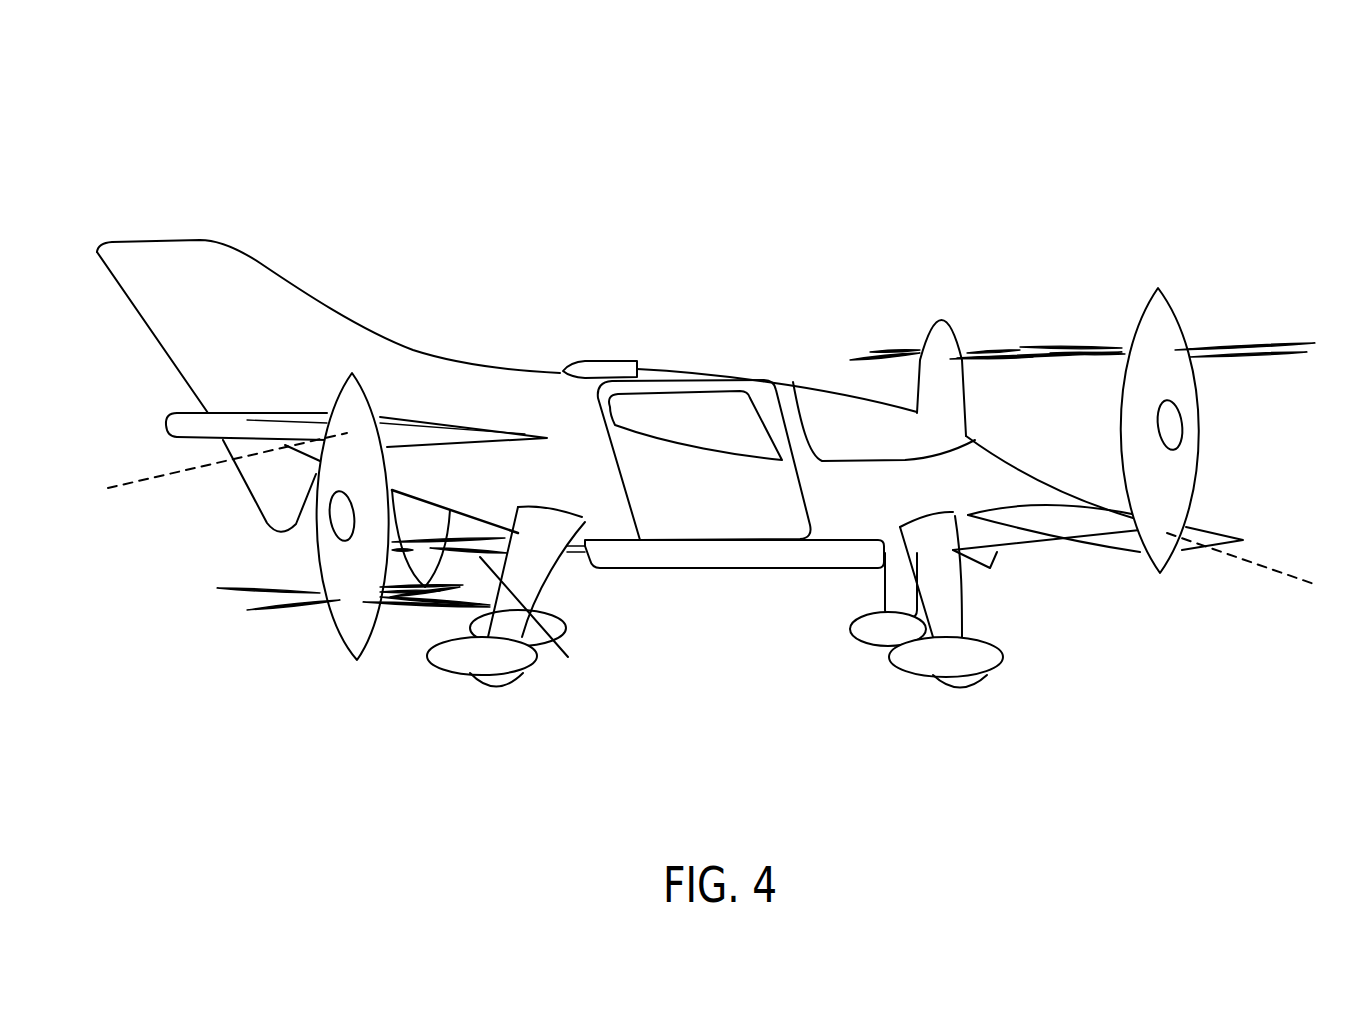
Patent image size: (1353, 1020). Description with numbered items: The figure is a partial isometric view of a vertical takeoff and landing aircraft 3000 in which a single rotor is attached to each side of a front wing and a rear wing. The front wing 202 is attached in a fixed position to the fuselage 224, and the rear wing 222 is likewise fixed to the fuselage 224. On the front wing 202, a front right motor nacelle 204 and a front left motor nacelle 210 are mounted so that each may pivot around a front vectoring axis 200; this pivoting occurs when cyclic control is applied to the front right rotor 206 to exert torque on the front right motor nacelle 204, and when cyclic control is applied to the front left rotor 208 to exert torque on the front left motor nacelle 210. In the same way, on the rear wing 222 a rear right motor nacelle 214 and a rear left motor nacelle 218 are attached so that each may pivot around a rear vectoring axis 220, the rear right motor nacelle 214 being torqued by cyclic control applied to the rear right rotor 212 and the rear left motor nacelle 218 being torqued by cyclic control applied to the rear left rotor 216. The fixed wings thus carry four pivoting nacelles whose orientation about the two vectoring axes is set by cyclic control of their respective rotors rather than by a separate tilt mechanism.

The vertical takeoff and landing aircraft 3000 is at (702, 368).
The front vectoring axis 200 is at (1273, 566).
The front wing 202 is at (1078, 523).
The front right motor nacelle 204 is at (1178, 487).
The front right rotor 206 is at (1018, 346).
The front left rotor 208 is at (852, 355).
The front left motor nacelle 210 is at (947, 387).
The rear right rotor 212 is at (217, 588).
The rear right motor nacelle 214 is at (332, 580).
The rear left rotor 216 is at (506, 600).
The rear left motor nacelle 218 is at (427, 522).
The rear vectoring axis 220 is at (122, 482).
The rear wing 222 is at (265, 427).
The fuselage 224 is at (675, 368).